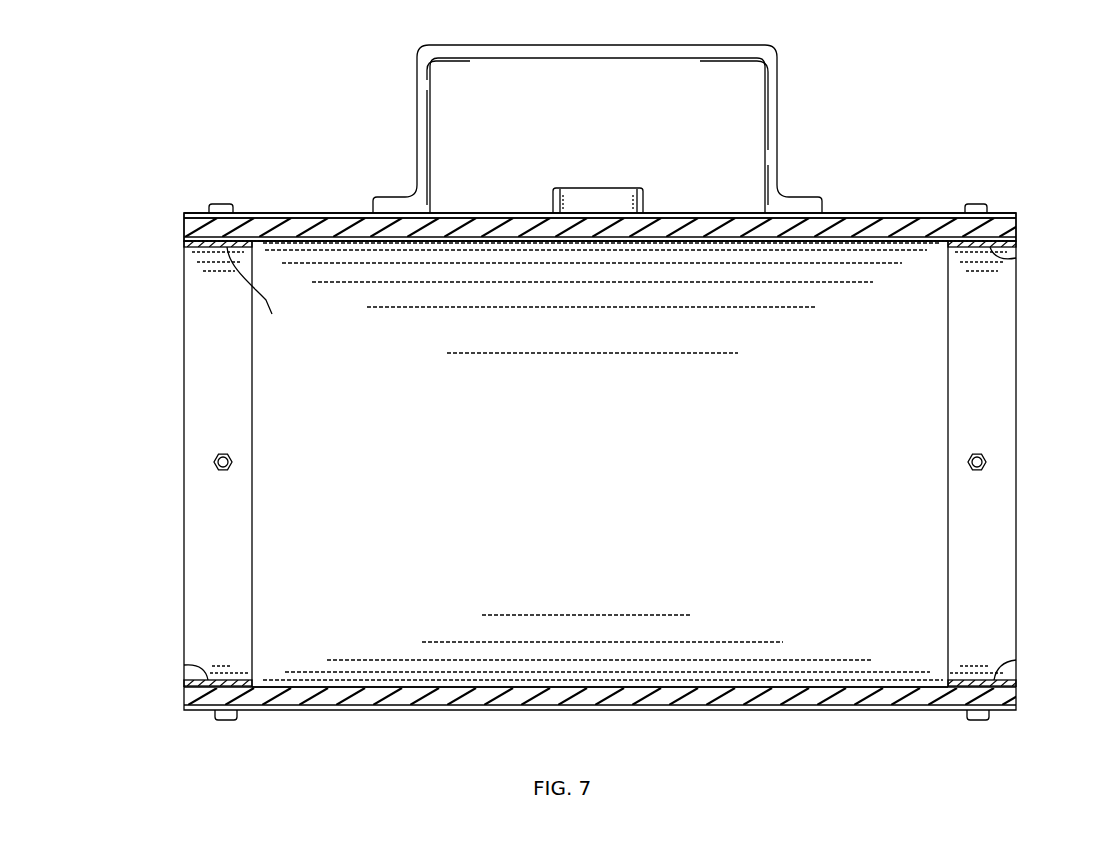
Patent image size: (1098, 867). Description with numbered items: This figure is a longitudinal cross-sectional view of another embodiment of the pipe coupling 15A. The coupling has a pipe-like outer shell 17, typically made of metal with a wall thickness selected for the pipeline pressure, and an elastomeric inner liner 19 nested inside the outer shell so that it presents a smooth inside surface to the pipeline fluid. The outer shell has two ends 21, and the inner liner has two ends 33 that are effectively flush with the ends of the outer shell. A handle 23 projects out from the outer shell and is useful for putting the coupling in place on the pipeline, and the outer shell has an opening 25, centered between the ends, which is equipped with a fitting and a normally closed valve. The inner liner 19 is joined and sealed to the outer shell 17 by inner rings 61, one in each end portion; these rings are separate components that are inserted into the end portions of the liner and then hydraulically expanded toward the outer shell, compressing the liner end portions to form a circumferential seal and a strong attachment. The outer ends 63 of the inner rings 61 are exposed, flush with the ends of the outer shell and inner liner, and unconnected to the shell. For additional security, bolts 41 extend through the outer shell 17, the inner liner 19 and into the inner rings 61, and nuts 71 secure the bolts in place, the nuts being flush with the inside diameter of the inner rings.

The pipe coupling 15A is at (340, 212).
The outer shell 17 is at (715, 211).
The inner liner 19 is at (520, 228).
The ends of the outer shell 21 is at (184, 212).
The handle 23 is at (417, 86).
The opening 25 is at (630, 203).
The ends of the inner liner 33 is at (183, 226).
The bolts 41 is at (976, 203).
The inner rings 61 is at (1053, 672).
The outer ends of the inner rings 63 is at (183, 245).
The nuts 71 is at (220, 452).